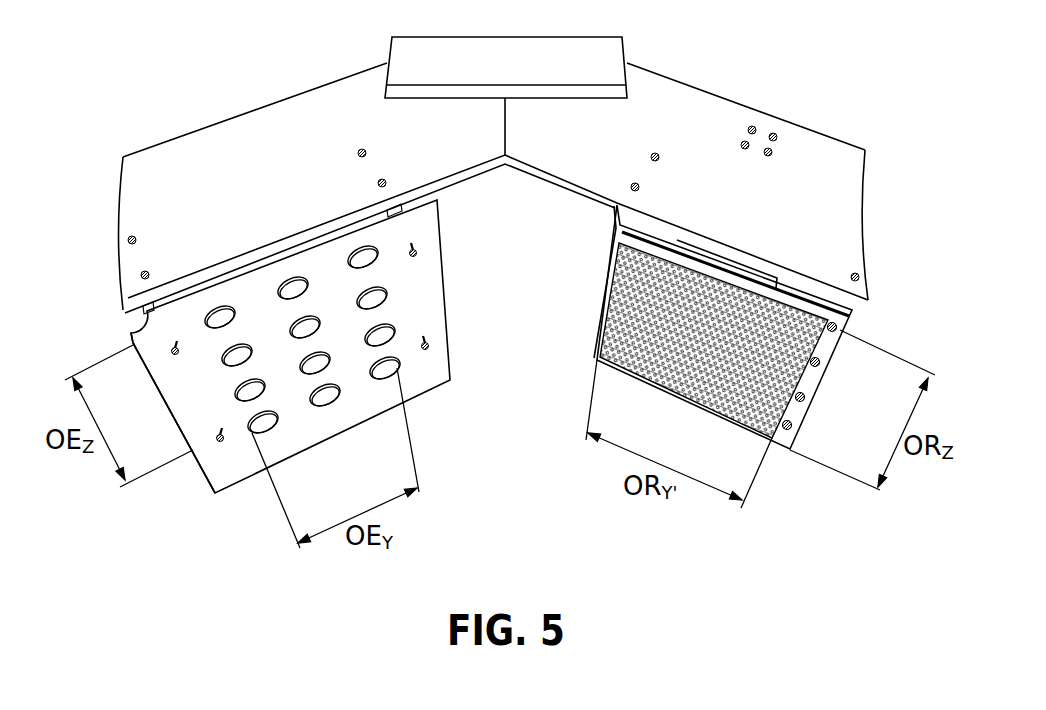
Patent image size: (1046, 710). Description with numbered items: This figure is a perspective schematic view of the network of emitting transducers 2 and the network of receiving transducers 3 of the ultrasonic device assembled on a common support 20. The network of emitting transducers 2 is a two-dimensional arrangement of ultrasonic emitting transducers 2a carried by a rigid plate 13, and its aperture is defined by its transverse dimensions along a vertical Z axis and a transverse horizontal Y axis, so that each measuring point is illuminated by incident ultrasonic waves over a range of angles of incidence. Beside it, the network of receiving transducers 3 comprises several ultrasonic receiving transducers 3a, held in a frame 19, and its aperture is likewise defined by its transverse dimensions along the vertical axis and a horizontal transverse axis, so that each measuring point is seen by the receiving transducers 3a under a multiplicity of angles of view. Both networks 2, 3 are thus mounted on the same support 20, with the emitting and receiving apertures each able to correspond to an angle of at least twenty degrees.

The housing shell 20 is at (690, 120).
The network of emitting transducers 2 is at (183, 476).
The ultrasonic emitting transducer 2a is at (319, 405).
The rigid plate 13 is at (198, 392).
The network of receiving transducers 3 is at (831, 396).
The ultrasonic receiving transducer 3a is at (743, 414).
The grille frame 19 is at (827, 345).